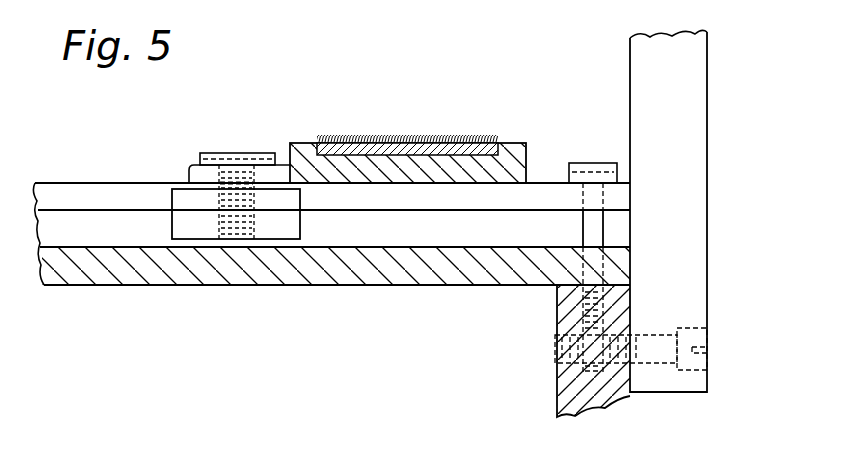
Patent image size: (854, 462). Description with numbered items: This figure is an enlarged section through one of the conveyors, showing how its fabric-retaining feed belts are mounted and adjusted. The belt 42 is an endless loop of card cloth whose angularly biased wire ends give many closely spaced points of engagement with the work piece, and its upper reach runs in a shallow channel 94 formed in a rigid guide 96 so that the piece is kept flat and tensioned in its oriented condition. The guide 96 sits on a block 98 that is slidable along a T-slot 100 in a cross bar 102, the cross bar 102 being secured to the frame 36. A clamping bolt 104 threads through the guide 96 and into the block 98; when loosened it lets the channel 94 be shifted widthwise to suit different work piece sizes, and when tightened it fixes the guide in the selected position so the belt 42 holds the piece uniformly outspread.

The cross bar 102 is at (67, 183).
The T-slot 100 is at (400, 211).
The block 98 is at (173, 198).
The clamping bolt 104 is at (233, 153).
The belt 42 is at (472, 143).
The channel 94 is at (330, 143).
The guide 96 is at (526, 158).
The frame 36 is at (557, 393).